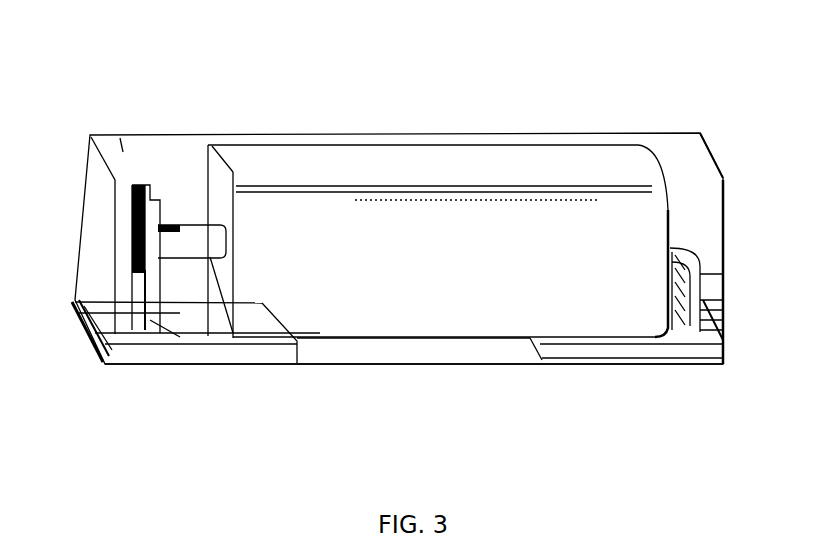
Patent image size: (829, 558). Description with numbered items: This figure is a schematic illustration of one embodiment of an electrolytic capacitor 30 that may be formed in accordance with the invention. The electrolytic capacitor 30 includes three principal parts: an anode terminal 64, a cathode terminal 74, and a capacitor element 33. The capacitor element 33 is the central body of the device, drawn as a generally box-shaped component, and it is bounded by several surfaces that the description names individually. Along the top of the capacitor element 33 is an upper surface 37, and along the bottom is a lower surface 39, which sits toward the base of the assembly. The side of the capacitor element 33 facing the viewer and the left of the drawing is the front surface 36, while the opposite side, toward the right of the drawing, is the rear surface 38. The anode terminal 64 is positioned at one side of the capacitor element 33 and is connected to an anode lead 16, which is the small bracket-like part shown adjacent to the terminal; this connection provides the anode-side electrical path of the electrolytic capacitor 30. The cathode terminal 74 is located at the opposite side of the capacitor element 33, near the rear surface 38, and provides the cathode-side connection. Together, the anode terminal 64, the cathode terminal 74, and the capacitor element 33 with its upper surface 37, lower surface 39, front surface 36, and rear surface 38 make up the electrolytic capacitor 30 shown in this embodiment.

The electrolytic capacitor 30 is at (493, 102).
The capacitor element 33 is at (462, 281).
The front surface 36 is at (226, 178).
The upper surface 37 is at (520, 172).
The rear surface 38 is at (668, 212).
The lower surface 39 is at (425, 340).
The anode terminal 64 is at (130, 268).
The anode lead 16 is at (188, 248).
The cathode terminal 74 is at (700, 274).